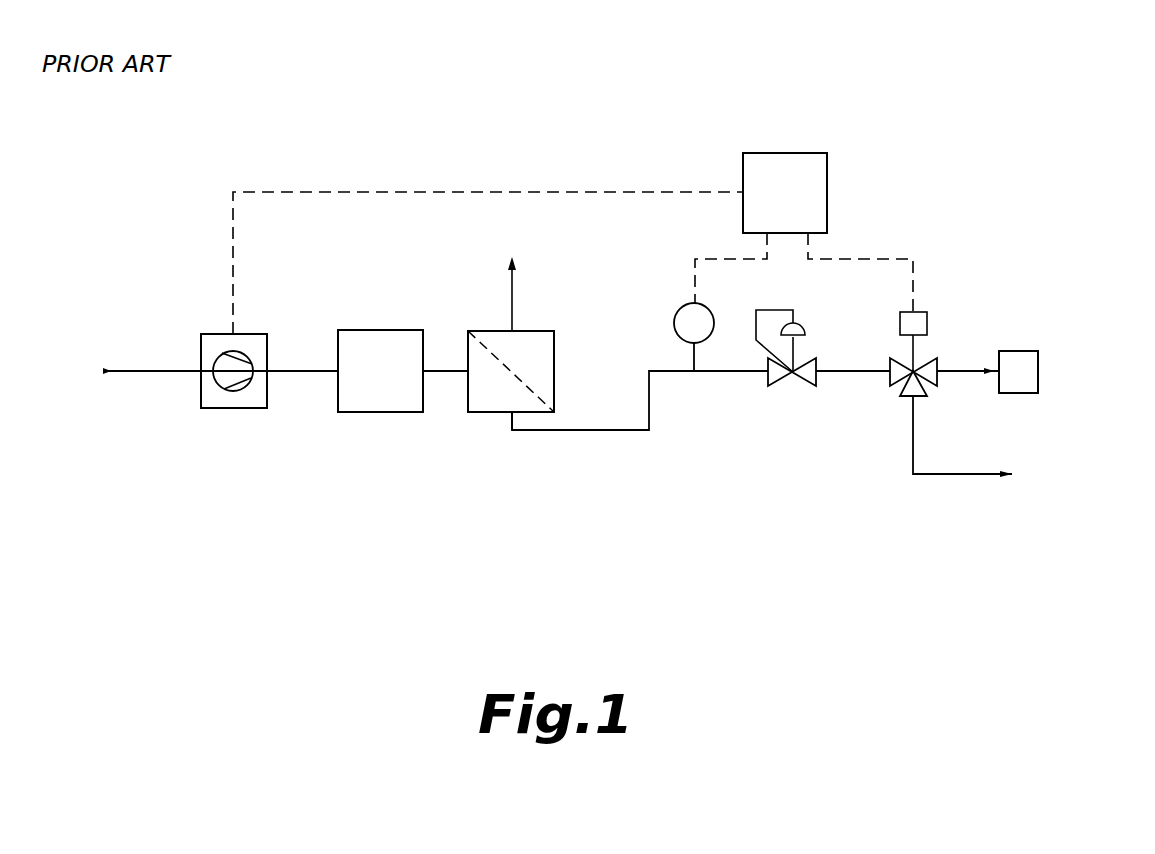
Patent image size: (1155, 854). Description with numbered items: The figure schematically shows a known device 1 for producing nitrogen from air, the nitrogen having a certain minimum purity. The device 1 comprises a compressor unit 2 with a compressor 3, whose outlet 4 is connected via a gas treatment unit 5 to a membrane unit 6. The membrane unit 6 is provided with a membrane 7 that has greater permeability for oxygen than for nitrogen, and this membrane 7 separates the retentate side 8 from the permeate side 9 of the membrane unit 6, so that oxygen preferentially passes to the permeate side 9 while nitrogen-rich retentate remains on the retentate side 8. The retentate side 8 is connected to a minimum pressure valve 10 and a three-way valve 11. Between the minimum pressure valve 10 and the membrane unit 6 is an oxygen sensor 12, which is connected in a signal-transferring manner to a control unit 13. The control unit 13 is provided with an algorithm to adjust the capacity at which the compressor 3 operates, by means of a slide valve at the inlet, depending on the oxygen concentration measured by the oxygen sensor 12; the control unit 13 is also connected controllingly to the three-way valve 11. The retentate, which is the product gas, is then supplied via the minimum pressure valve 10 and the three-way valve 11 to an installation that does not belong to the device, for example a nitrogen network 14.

The device 1 is at (930, 80).
The compressor unit 2 is at (218, 333).
The compressor 3 is at (223, 372).
The outlet 4 is at (268, 372).
The gas treatment unit 5 is at (378, 390).
The membrane unit 6 is at (545, 331).
The membrane 7 is at (523, 383).
The retentate side 8 is at (497, 397).
The permeate side 9 is at (530, 355).
The minimum pressure valve 10 is at (778, 377).
The three-way valve 11 is at (902, 375).
The oxygen sensor 12 is at (710, 305).
The control unit 13 is at (819, 180).
The nitrogen network 14 is at (1030, 362).